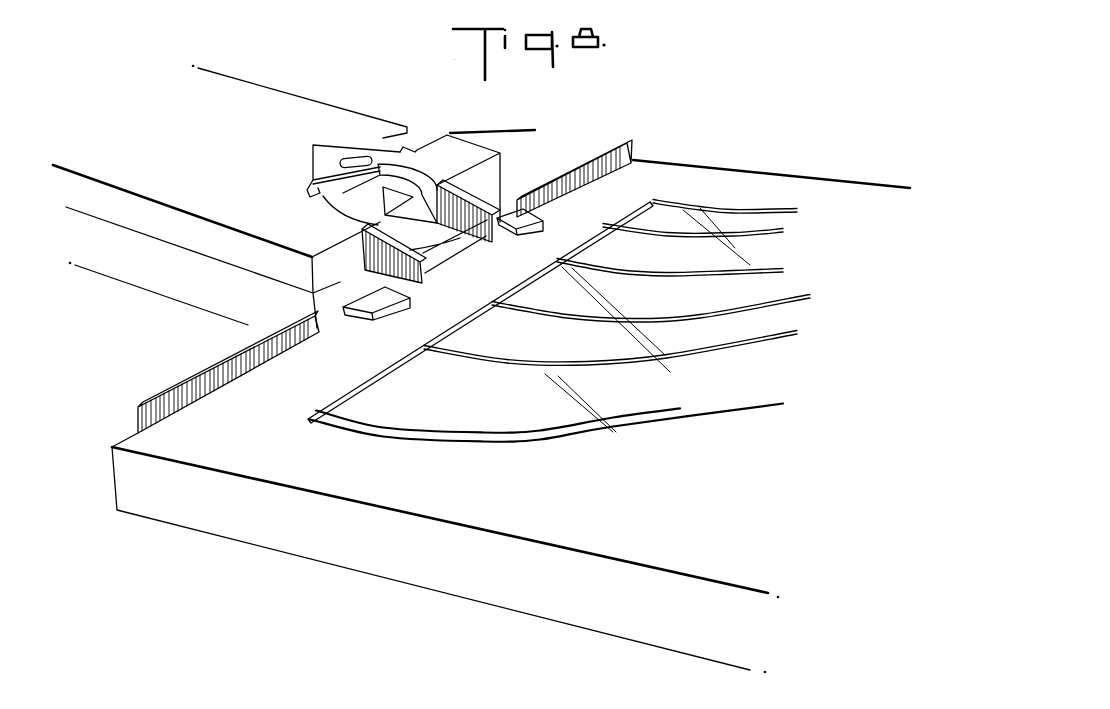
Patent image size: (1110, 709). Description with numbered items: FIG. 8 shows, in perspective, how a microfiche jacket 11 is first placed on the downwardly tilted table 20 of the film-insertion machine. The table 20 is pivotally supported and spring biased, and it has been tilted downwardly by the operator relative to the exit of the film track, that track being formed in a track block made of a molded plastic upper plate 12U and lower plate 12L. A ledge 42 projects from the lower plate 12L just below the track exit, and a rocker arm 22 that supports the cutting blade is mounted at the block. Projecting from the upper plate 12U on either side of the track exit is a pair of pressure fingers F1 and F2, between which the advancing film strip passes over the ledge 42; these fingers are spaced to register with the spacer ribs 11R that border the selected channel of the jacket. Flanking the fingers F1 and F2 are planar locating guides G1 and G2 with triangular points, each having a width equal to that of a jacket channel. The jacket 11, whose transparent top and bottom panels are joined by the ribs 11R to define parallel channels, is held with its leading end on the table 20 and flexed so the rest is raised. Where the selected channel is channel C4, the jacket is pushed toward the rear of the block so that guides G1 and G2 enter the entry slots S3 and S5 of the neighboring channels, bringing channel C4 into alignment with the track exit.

The upper plate 12U is at (323, 113).
The lower plate 12L is at (248, 325).
The rocker arm 22 is at (440, 219).
The pressure finger F1 is at (340, 240).
The pressure finger F2 is at (463, 192).
The locating guide G1 is at (387, 312).
The locating guide G2 is at (546, 223).
The slot S3 is at (476, 312).
The slot S5 is at (592, 236).
The microfiche jacket 11 is at (480, 440).
The spacer ribs 11R is at (648, 244).
The channel C4 is at (664, 301).
The ledge 42 is at (442, 243).
The table 20 is at (252, 518).